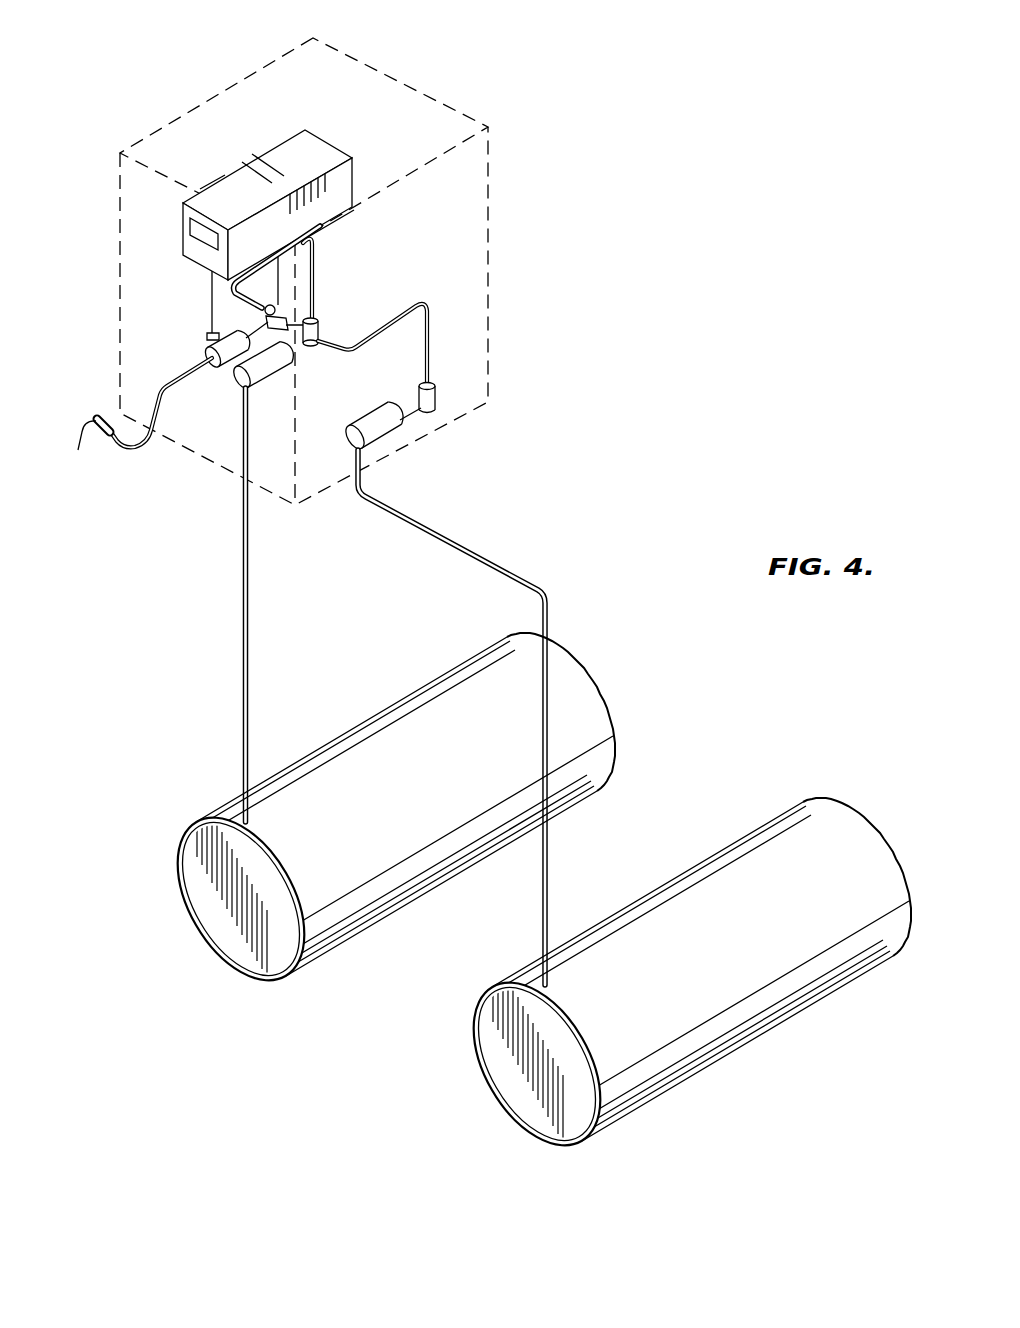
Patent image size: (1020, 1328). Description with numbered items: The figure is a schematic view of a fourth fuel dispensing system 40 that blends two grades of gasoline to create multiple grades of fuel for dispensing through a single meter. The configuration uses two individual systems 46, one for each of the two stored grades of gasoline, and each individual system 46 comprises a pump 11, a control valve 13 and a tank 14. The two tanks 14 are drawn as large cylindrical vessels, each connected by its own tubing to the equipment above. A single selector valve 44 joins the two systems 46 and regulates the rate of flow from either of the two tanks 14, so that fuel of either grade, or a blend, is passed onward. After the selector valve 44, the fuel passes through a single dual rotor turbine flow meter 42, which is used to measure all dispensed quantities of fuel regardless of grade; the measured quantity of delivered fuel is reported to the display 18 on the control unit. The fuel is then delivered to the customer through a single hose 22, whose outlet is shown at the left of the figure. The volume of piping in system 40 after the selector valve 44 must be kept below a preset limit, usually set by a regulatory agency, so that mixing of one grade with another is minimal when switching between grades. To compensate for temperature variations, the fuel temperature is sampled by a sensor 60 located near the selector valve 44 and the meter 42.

The pump 11 is at (390, 433).
The control valve 13 is at (440, 395).
The tank 14 is at (203, 937).
The display 18 is at (315, 147).
The hose 22 is at (95, 432).
The fourth system 40 is at (243, 168).
The dual rotor turbine flow meter 42 is at (205, 357).
The selector valve 44 is at (263, 313).
The individual system 46 is at (238, 553).
The sensor 60 is at (210, 340).